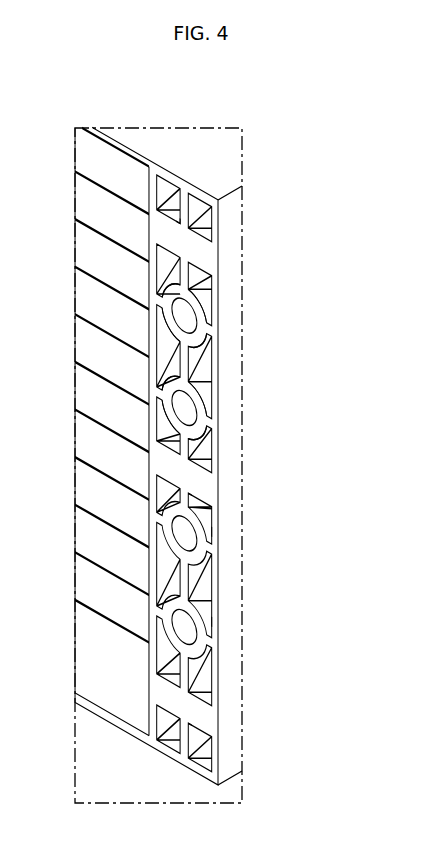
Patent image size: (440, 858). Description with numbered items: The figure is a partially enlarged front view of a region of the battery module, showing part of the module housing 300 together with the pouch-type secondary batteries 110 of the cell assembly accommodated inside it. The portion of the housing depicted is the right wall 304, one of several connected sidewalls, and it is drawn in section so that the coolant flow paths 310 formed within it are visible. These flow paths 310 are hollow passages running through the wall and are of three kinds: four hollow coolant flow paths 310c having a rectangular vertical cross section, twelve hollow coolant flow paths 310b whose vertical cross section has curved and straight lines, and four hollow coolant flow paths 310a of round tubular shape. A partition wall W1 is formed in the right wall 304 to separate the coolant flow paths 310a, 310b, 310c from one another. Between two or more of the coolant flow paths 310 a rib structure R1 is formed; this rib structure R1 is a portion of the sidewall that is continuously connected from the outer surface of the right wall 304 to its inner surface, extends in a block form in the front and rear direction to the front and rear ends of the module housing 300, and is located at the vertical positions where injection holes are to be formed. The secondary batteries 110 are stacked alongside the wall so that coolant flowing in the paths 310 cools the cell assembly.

The module housing 300 is at (140, 153).
The secondary battery 110 is at (87, 252).
The right wall 304 is at (230, 553).
The coolant flow path 310 is at (265, 473).
The hollow coolant flow path with a tubular shape 310a is at (186, 318).
The hollow coolant flow path with a curved and straight cross section 310b is at (236, 361).
The hollow coolant flow path with a rectangular cross section 310c is at (197, 211).
The rib structure R1 is at (181, 237).
The partition wall W1 is at (208, 510).